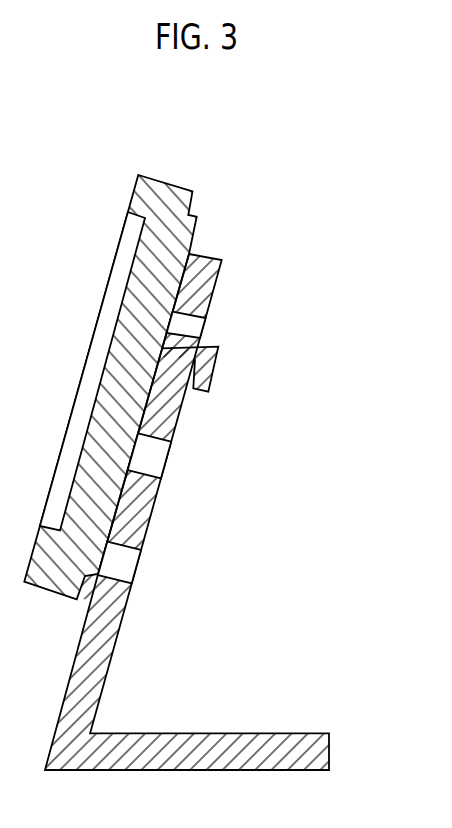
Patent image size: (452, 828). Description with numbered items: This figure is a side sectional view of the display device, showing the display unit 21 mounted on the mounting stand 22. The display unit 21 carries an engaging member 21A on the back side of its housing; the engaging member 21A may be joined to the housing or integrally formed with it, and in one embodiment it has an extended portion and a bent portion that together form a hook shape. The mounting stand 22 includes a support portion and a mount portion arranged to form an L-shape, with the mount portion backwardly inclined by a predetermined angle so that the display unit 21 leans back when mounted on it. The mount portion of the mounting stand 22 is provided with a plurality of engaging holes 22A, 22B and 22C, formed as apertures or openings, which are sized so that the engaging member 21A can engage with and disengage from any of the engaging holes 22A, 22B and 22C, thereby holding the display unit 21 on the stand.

The display unit 21 is at (168, 191).
The engaging member 21A is at (208, 383).
The mounting stand 22 is at (322, 750).
The engaging hole 22A is at (190, 328).
The engaging hole 22B is at (148, 470).
The engaging hole 22C is at (128, 572).